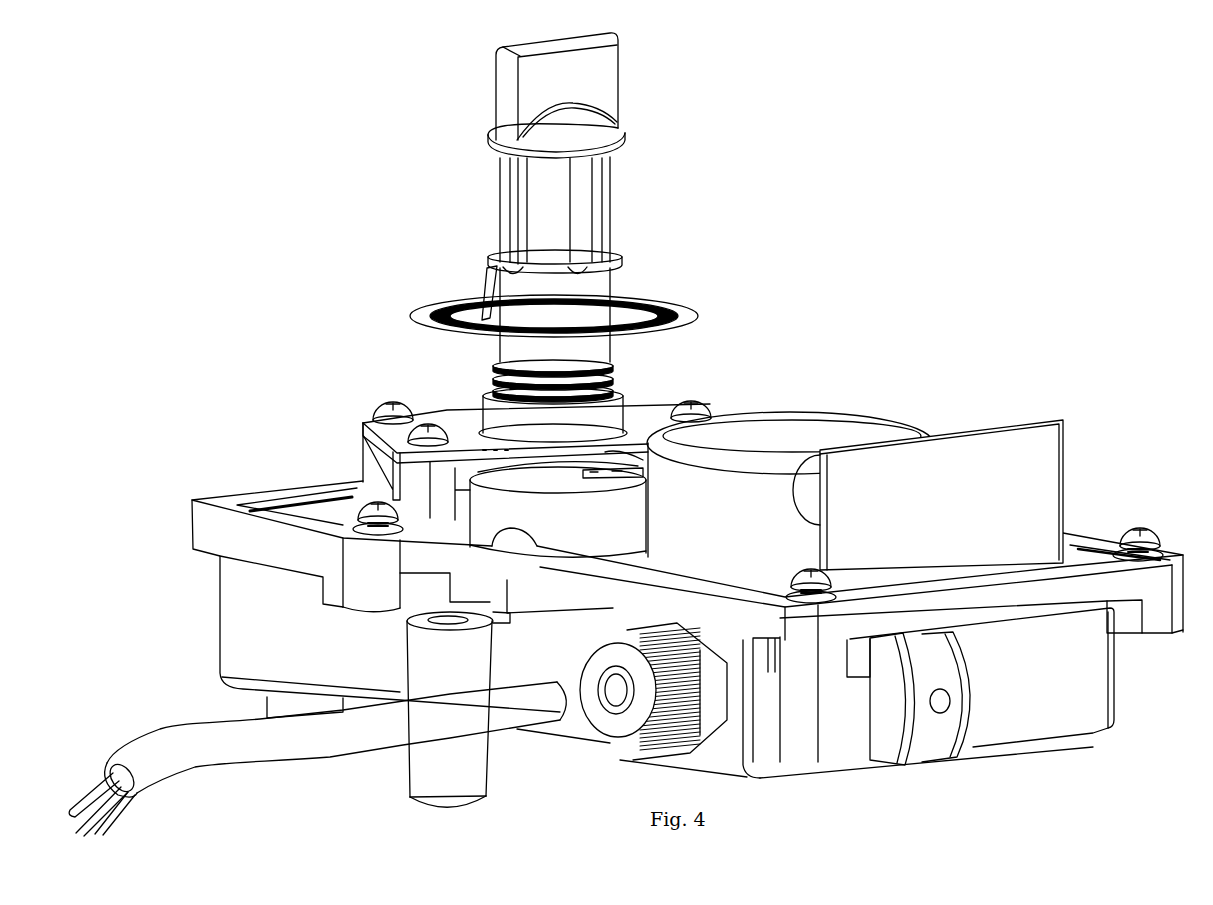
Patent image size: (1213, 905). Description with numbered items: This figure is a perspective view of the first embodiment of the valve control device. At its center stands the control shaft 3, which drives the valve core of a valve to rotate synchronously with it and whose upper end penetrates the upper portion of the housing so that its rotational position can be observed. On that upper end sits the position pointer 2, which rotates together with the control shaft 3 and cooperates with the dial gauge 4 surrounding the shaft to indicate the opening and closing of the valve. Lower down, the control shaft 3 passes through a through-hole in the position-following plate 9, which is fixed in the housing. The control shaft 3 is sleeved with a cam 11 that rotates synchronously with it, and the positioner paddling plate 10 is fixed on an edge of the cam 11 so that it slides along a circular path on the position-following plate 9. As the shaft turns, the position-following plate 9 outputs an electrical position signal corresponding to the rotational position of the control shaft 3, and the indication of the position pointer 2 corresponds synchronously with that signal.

The position pointer 2 is at (488, 252).
The control shaft 3 is at (607, 205).
The dial gauge 4 is at (703, 319).
The position-following plate 9 is at (445, 410).
The positioner paddling plate 10 is at (578, 470).
The cam 11 is at (535, 514).